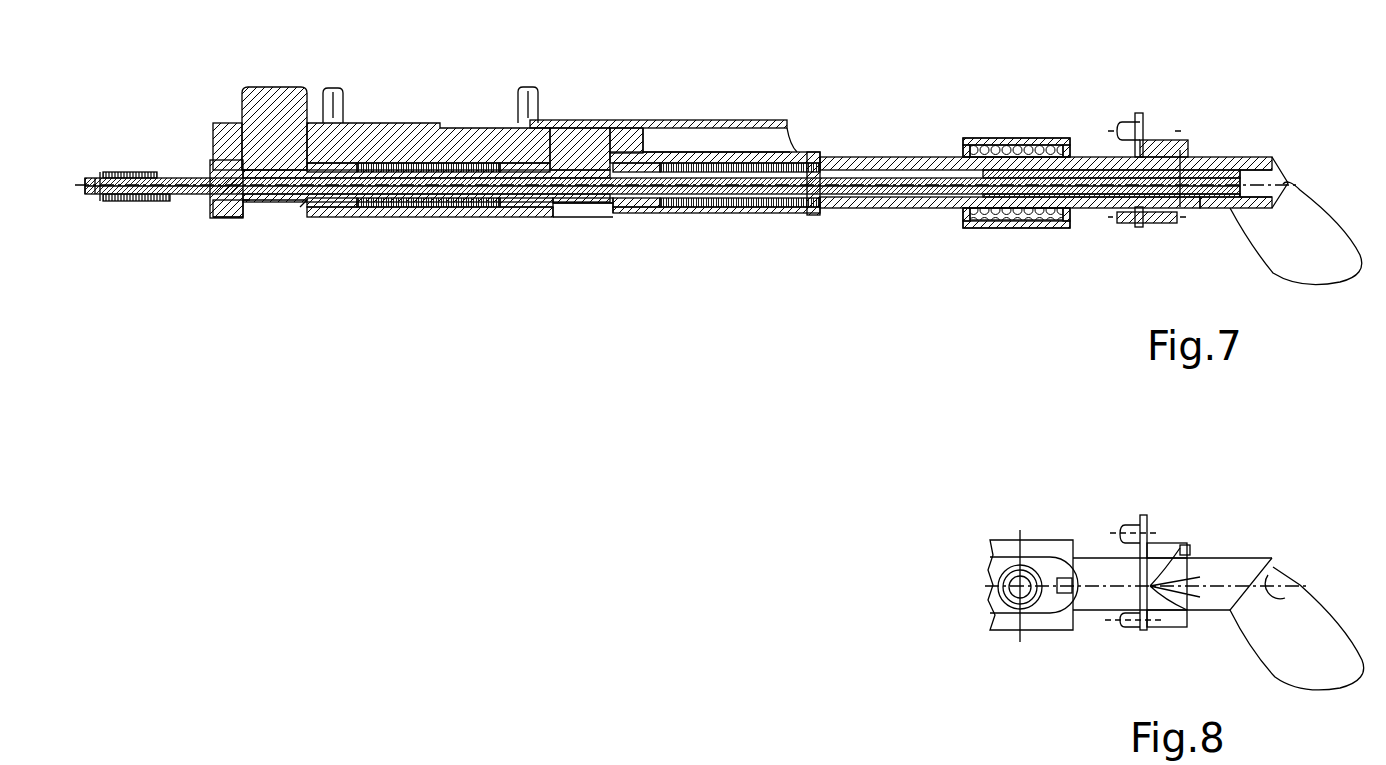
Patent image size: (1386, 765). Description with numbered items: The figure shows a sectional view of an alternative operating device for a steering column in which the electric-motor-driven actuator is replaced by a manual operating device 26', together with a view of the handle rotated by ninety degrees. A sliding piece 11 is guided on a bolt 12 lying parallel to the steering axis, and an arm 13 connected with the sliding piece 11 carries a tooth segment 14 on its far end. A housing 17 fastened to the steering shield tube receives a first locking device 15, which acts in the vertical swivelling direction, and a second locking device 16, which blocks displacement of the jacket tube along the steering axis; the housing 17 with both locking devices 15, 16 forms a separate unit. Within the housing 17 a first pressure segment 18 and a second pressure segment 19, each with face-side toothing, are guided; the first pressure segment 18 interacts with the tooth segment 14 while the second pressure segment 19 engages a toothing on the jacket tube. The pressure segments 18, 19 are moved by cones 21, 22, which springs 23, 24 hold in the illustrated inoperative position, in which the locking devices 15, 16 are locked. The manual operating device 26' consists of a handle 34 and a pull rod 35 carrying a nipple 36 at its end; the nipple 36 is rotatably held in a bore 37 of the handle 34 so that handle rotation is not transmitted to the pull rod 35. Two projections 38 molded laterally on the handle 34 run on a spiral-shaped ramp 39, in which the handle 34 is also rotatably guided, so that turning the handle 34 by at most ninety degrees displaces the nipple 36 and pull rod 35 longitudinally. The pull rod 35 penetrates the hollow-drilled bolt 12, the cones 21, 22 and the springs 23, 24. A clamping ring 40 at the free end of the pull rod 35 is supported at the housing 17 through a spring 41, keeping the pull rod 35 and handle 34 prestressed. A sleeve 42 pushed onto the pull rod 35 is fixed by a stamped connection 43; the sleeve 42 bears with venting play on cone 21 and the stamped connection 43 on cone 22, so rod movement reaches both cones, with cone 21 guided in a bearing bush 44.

In FIG. 7, the sliding piece 11 is at (1015, 228).
In FIG. 7, the bolt 12 is at (945, 208).
In FIG. 7, the arm 13 is at (755, 120).
In FIG. 7, the tooth segment 14 is at (595, 128).
In FIG. 7, the first locking device 15 is at (587, 270).
In FIG. 7, the second locking device 16 is at (280, 262).
In FIG. 7, the housing 17 is at (375, 123).
In FIG. 7, the first pressure segment 18 is at (555, 128).
In FIG. 7, the second pressure segment 19 is at (275, 87).
In FIG. 7, the cone 21 is at (605, 213).
In FIG. 7, the cone 22 is at (300, 215).
In FIG. 7, the spring 23 is at (745, 213).
In FIG. 7, the spring 24 is at (420, 212).
In FIG. 7, the manual operating device 26' is at (451, 417).
In FIG. 7, the handle 34 is at (1272, 242).
In FIG. 8, the handle 34 is at (1258, 572).
In FIG. 7, the pull rod 35 is at (88, 178).
In FIG. 7, the nipple 36 is at (1215, 165).
In FIG. 7, the bore 37 is at (1222, 208).
In FIG. 8, the projections 38 is at (1195, 580).
In FIG. 7, the spiral-shaped ramp 39 is at (1165, 140).
In FIG. 8, the spiral-shaped ramp 39 is at (1185, 545).
In FIG. 7, the clamping ring 40 is at (90, 195).
In FIG. 7, the spring 41 is at (120, 170).
In FIG. 7, the sleeve 42 is at (107, 201).
In FIG. 7, the stamped connection 43 is at (145, 200).
In FIG. 7, the bearing bush 44 is at (210, 218).